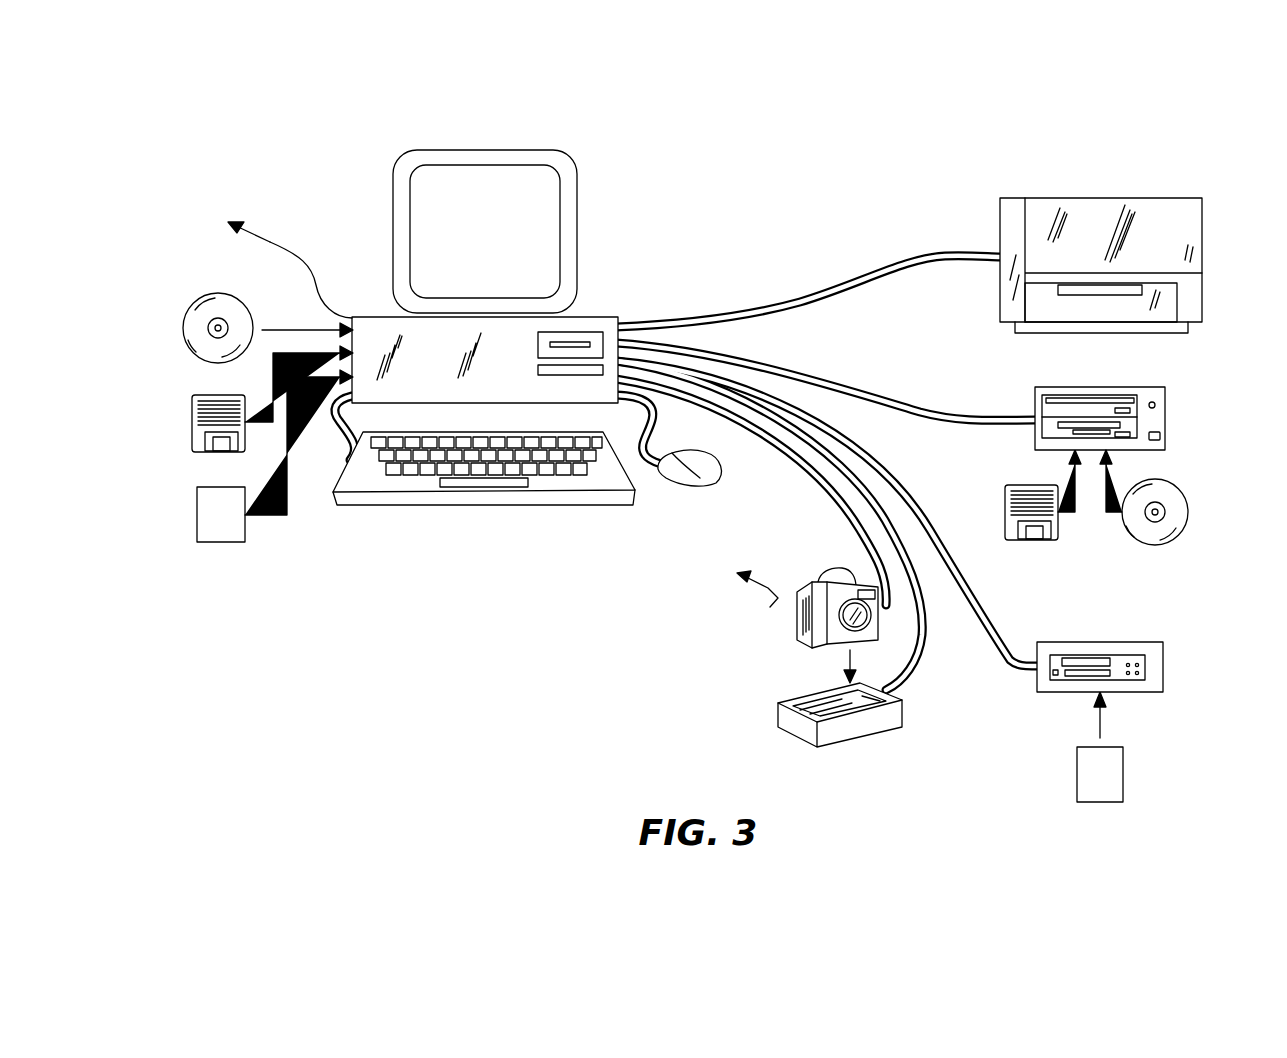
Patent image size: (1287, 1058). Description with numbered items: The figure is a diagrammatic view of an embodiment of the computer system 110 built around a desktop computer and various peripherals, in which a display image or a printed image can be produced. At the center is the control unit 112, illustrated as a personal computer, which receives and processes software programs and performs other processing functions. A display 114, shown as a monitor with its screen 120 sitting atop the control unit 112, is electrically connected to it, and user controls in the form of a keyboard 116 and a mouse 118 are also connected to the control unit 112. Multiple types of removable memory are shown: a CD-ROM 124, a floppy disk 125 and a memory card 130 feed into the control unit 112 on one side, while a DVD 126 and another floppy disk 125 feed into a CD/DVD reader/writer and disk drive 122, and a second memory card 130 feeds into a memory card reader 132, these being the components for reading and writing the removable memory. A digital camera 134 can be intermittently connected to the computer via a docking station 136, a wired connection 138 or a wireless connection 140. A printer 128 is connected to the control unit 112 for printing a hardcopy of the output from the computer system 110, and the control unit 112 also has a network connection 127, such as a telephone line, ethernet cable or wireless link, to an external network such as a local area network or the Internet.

The computer system 110 is at (270, 184).
The control unit 112 is at (372, 323).
The display 114 is at (476, 229).
The keyboard 116 is at (366, 500).
The mouse 118 is at (683, 470).
The display screen 120 is at (543, 238).
The CD/DVD reader/writer and disk drive 122 is at (1157, 420).
The CD-ROM 124 is at (200, 325).
The floppy disk 125 is at (195, 428).
The DVD 126 is at (1153, 540).
The network connection 127 is at (270, 242).
The printer 128 is at (1105, 205).
The memory card 130 is at (207, 512).
The memory card reader 132 is at (1155, 667).
The digital camera 134 is at (835, 578).
The docking station 136 is at (778, 712).
The wired connection 138 is at (840, 502).
The wireless connection 140 is at (797, 612).